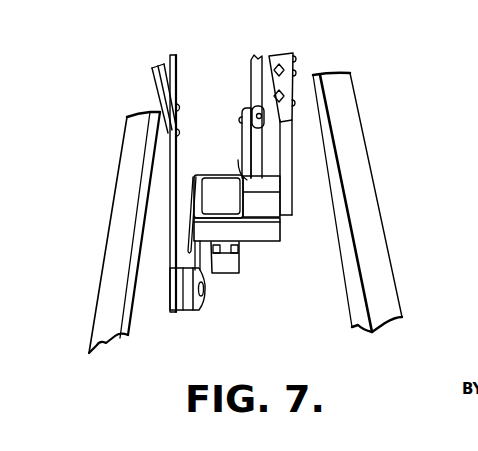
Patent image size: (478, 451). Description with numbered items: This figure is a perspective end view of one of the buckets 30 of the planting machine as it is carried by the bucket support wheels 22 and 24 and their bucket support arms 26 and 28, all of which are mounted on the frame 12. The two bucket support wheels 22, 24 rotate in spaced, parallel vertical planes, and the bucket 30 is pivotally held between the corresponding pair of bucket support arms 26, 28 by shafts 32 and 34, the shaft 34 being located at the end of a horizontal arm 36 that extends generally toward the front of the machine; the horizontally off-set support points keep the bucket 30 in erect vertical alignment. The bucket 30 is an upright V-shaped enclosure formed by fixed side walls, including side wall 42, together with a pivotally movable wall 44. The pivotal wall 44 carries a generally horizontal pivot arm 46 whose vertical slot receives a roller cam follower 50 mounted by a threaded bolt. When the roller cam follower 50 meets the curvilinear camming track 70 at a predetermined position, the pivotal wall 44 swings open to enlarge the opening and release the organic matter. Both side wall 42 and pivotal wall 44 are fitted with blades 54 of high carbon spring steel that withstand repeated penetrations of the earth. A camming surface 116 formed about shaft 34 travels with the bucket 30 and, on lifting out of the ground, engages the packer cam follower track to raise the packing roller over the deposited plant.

The frame 12 is at (107, 294).
The bucket support wheel 22 is at (294, 52).
The bucket support wheel 24 is at (157, 82).
The bucket support arm 26 is at (293, 143).
The bucket support arm 28 is at (176, 164).
The bucket 30 is at (228, 281).
The shaft 32 is at (278, 198).
The shaft 34 is at (193, 311).
The horizontal arm 36 is at (204, 311).
The side wall 42 is at (218, 230).
The pivotal wall 44 is at (230, 203).
The pivot arm 46 is at (247, 136).
The roller cam follower 50 is at (256, 108).
The blade 54 is at (228, 258).
The curvilinear camming track 70 is at (251, 58).
The camming surface 116 is at (181, 297).